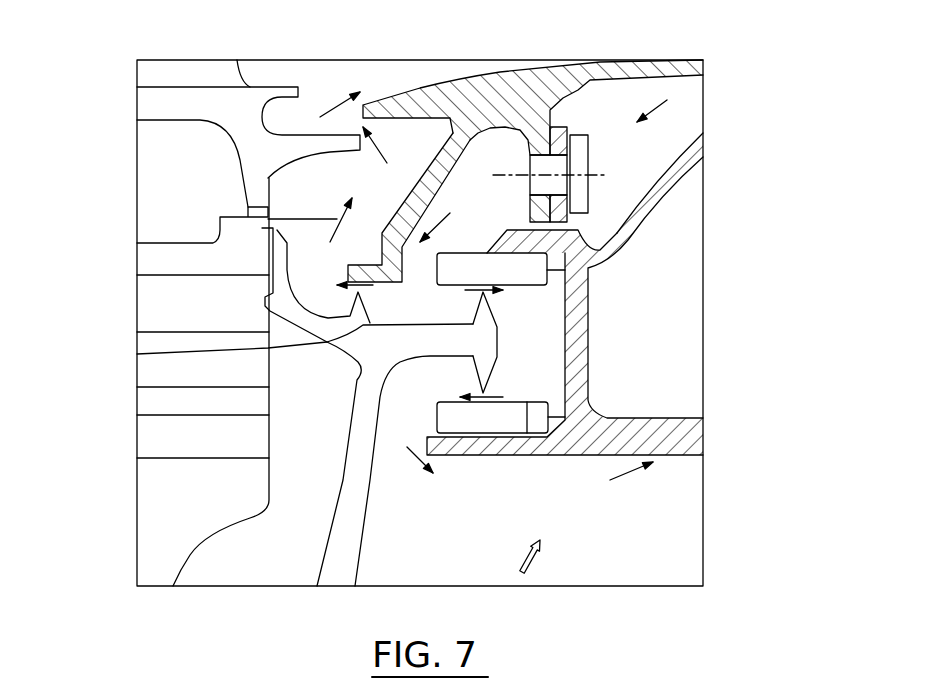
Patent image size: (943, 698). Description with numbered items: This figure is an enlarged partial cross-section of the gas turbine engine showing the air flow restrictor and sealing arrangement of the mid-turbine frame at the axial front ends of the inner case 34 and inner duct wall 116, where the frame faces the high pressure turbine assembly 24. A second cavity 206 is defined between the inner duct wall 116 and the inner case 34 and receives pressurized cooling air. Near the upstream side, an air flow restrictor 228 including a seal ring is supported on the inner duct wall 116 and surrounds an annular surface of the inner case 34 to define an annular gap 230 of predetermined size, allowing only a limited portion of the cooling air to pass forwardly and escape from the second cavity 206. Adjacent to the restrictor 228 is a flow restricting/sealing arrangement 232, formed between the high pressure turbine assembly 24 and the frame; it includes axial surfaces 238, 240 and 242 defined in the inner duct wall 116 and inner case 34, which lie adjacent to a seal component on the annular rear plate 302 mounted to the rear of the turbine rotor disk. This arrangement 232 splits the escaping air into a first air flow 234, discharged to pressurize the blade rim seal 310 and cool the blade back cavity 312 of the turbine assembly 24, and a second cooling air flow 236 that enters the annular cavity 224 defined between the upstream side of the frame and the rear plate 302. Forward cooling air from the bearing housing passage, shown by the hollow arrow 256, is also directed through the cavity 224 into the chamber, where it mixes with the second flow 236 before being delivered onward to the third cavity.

The high pressure turbine assembly 24 is at (153, 443).
The inner case 34 is at (565, 255).
The inner duct wall 116 is at (590, 72).
The second cavity 206 is at (675, 123).
The annular cavity 224 is at (512, 535).
The air flow restrictor 228 is at (553, 143).
The annular gap 230 is at (553, 223).
The flow restricting/sealing arrangement 232 is at (390, 225).
The first air flow 234 is at (268, 219).
The second cooling air flow 236 is at (575, 360).
The axial surface 238 is at (137, 354).
The axial surface 240 is at (530, 287).
The axial surface 242 is at (528, 403).
The hollow arrow 256 is at (540, 558).
The annular rear plate 302 is at (345, 542).
The blade rim seal 310 is at (308, 147).
The blade back cavity 312 is at (268, 182).